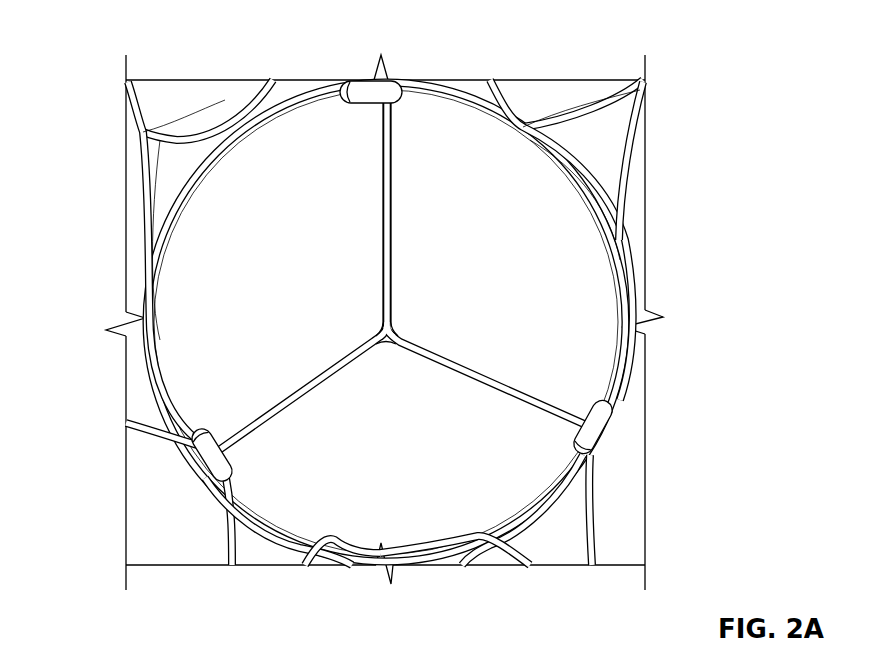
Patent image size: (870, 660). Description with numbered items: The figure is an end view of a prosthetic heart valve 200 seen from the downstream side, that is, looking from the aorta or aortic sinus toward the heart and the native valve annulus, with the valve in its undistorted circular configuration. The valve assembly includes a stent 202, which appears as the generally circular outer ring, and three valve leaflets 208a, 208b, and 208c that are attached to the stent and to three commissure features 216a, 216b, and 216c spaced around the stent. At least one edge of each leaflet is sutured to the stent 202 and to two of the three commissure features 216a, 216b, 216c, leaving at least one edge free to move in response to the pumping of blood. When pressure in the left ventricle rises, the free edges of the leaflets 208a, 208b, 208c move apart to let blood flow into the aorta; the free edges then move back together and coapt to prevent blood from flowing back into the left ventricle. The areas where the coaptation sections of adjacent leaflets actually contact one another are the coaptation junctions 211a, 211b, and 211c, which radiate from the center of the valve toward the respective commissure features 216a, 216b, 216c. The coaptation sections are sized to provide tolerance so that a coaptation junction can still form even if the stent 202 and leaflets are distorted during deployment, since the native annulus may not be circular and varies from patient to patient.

The prosthetic heart valve 200 is at (668, 104).
The stent 202 is at (600, 107).
The valve leaflet 208a is at (372, 537).
The valve leaflet 208b is at (600, 250).
The valve leaflet 208c is at (185, 290).
The coaptation junction 211a is at (560, 405).
The coaptation junction 211b is at (388, 115).
The coaptation junction 211c is at (200, 460).
The commissure feature 216a is at (600, 432).
The commissure feature 216b is at (372, 92).
The commissure feature 216c is at (197, 455).